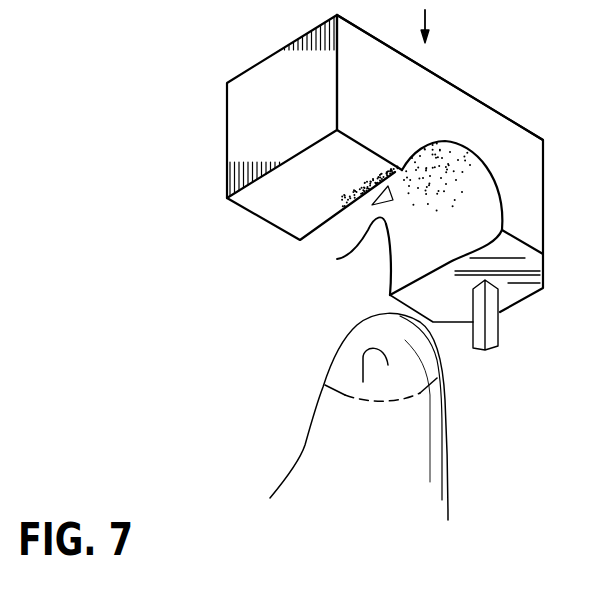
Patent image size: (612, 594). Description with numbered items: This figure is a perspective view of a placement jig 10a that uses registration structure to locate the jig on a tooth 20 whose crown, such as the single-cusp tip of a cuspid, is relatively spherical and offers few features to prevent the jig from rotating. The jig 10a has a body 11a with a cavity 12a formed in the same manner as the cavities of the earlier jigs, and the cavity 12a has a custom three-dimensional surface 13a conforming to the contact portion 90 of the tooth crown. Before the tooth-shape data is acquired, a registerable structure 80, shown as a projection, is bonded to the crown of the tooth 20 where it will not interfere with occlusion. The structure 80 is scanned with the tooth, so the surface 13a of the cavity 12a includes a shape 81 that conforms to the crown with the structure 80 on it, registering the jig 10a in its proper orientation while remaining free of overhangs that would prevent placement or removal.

The jig 10a is at (460, 90).
The body 11a is at (394, 105).
The cavity 12a is at (460, 147).
The custom three-dimensional surface 13a is at (455, 229).
The shape 81 is at (348, 258).
The tooth 20 is at (448, 413).
The registerable structure 80 is at (372, 350).
The contact portion of a crown of a tooth 90 is at (385, 405).